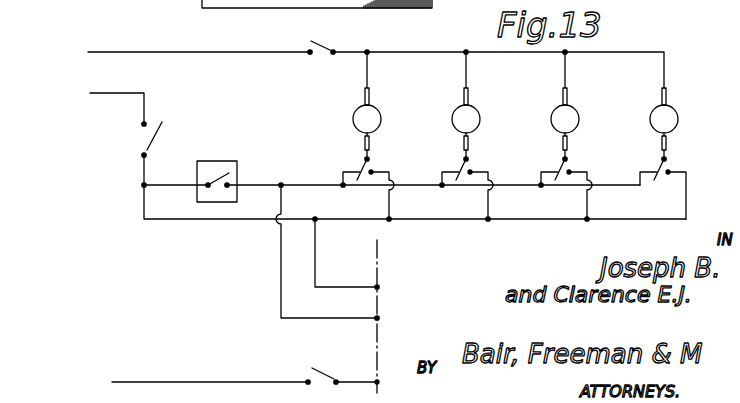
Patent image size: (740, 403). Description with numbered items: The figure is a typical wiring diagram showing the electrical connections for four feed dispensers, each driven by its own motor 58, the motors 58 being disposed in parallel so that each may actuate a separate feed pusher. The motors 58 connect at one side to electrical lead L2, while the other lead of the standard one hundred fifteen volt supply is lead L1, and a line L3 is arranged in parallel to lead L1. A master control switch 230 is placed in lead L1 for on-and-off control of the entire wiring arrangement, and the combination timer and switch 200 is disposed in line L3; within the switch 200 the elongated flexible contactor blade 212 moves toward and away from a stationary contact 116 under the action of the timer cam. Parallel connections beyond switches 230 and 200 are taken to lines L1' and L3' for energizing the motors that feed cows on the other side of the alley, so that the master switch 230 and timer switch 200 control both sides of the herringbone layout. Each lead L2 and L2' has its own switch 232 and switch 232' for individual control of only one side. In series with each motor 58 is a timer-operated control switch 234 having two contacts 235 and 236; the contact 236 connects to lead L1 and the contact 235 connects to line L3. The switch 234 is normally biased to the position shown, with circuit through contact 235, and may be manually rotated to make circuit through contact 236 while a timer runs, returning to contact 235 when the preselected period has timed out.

The motor 58 is at (379, 106).
The stationary contact of switch 116 is at (229, 187).
The combination timer and switch 200 is at (239, 160).
The elongated flexible contactor blade 212 is at (221, 178).
The master control switch 230 is at (142, 137).
The switch 232 is at (311, 60).
The switch 232' is at (295, 369).
The timer-operated control switch 234 is at (372, 163).
The contact 235 is at (363, 167).
The contact 236 is at (375, 173).
The electrical lead L1 is at (388, 162).
The electrical lead L2 is at (376, 60).
The line L3 is at (374, 179).
The line L1' is at (347, 254).
The lead L2' is at (245, 367).
The line L3' is at (327, 252).